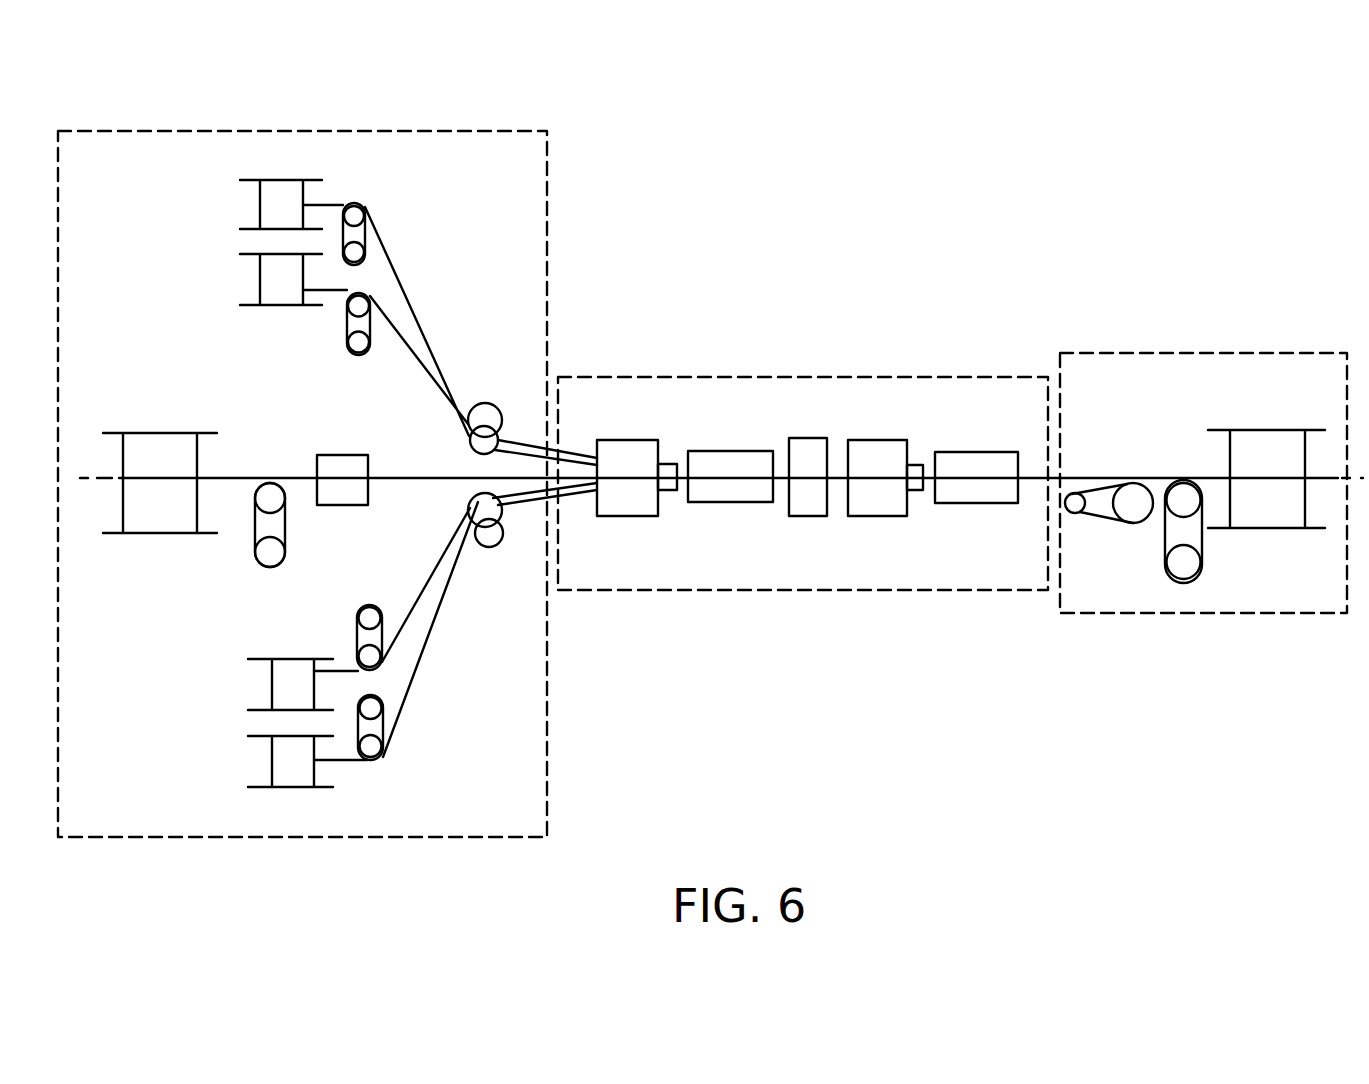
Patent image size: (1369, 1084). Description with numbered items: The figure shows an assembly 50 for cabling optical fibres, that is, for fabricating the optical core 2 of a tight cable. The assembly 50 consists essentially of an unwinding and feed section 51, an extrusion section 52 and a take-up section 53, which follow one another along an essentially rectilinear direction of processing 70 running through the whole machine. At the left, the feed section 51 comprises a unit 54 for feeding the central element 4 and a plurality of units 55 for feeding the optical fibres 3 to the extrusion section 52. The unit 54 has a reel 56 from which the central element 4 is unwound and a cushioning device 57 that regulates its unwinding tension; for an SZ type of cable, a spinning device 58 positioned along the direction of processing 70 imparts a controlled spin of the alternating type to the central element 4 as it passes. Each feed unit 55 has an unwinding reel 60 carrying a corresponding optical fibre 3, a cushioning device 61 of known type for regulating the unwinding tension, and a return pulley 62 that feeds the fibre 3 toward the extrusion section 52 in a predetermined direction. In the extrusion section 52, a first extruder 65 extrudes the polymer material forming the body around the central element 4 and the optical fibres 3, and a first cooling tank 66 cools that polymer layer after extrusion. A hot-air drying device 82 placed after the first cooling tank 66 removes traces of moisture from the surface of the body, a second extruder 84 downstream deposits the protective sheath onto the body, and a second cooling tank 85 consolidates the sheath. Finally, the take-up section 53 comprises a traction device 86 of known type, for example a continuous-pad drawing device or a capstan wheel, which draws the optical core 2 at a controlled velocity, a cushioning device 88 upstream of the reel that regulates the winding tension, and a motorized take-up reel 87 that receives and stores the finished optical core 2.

The optical core 2 is at (1212, 470).
The optical fibres 3 is at (428, 345).
The central element 4 is at (241, 480).
The assembly 50 is at (818, 251).
The unwinding and feed section 51 is at (530, 152).
The extrusion section 52 is at (718, 390).
The take-up section 53 is at (1157, 370).
The unit 54 is at (180, 390).
The feed units 55 is at (410, 303).
The reel 56 is at (162, 516).
The cushioning device 57 is at (263, 523).
The spinning device 58 is at (363, 455).
The unwinding reel 60 is at (273, 288).
The cushioning device 61 is at (368, 742).
The return pulley 62 is at (489, 533).
The first extruder 65 is at (618, 482).
The first cooling tank 66 is at (737, 490).
The direction of processing 70 is at (90, 480).
The hot-air drying device 82 is at (810, 453).
The second extruder 84 is at (880, 492).
The second cooling tank 85 is at (990, 490).
The traction device 86 is at (1100, 503).
The take-up reel 87 is at (1273, 518).
The cushioning device 88 is at (1180, 562).